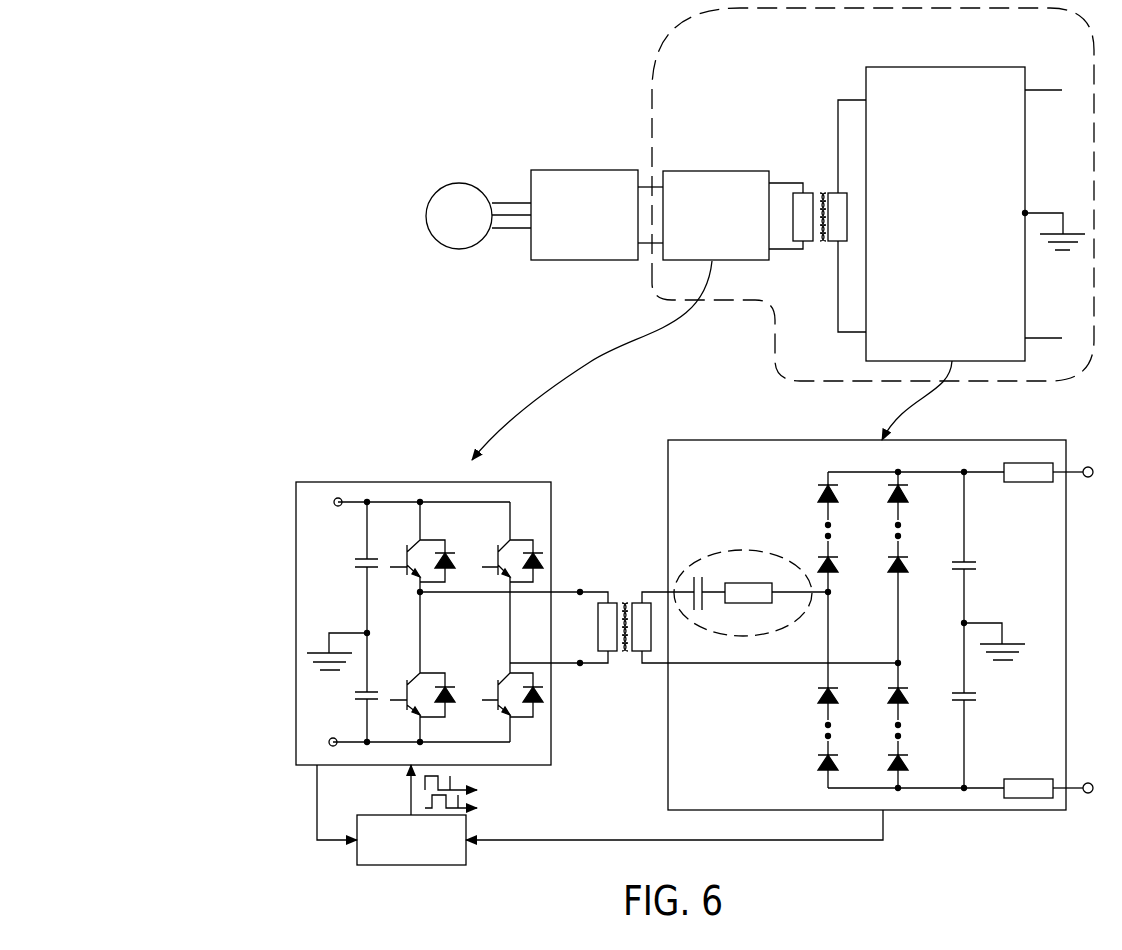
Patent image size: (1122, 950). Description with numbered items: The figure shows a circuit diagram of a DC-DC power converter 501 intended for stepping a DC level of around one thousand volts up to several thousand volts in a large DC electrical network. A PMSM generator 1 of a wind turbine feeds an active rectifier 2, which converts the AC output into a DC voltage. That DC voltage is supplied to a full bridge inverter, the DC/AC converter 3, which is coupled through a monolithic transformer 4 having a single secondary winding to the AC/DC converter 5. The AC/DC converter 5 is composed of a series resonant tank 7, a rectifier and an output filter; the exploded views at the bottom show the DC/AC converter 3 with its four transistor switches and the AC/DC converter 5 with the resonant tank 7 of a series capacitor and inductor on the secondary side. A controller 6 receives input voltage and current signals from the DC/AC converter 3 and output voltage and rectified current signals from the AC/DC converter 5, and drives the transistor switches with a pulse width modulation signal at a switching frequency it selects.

The charging system 501 is at (206, 89).
The PMSM generator 1 is at (460, 182).
The active rectifier 2 is at (585, 170).
The DC/AC converter 3 is at (718, 171).
The monolithic transformer 4 is at (823, 190).
The AC/DC converter 5 is at (926, 67).
The controller 6 is at (408, 866).
The resonant tank 7 is at (715, 568).